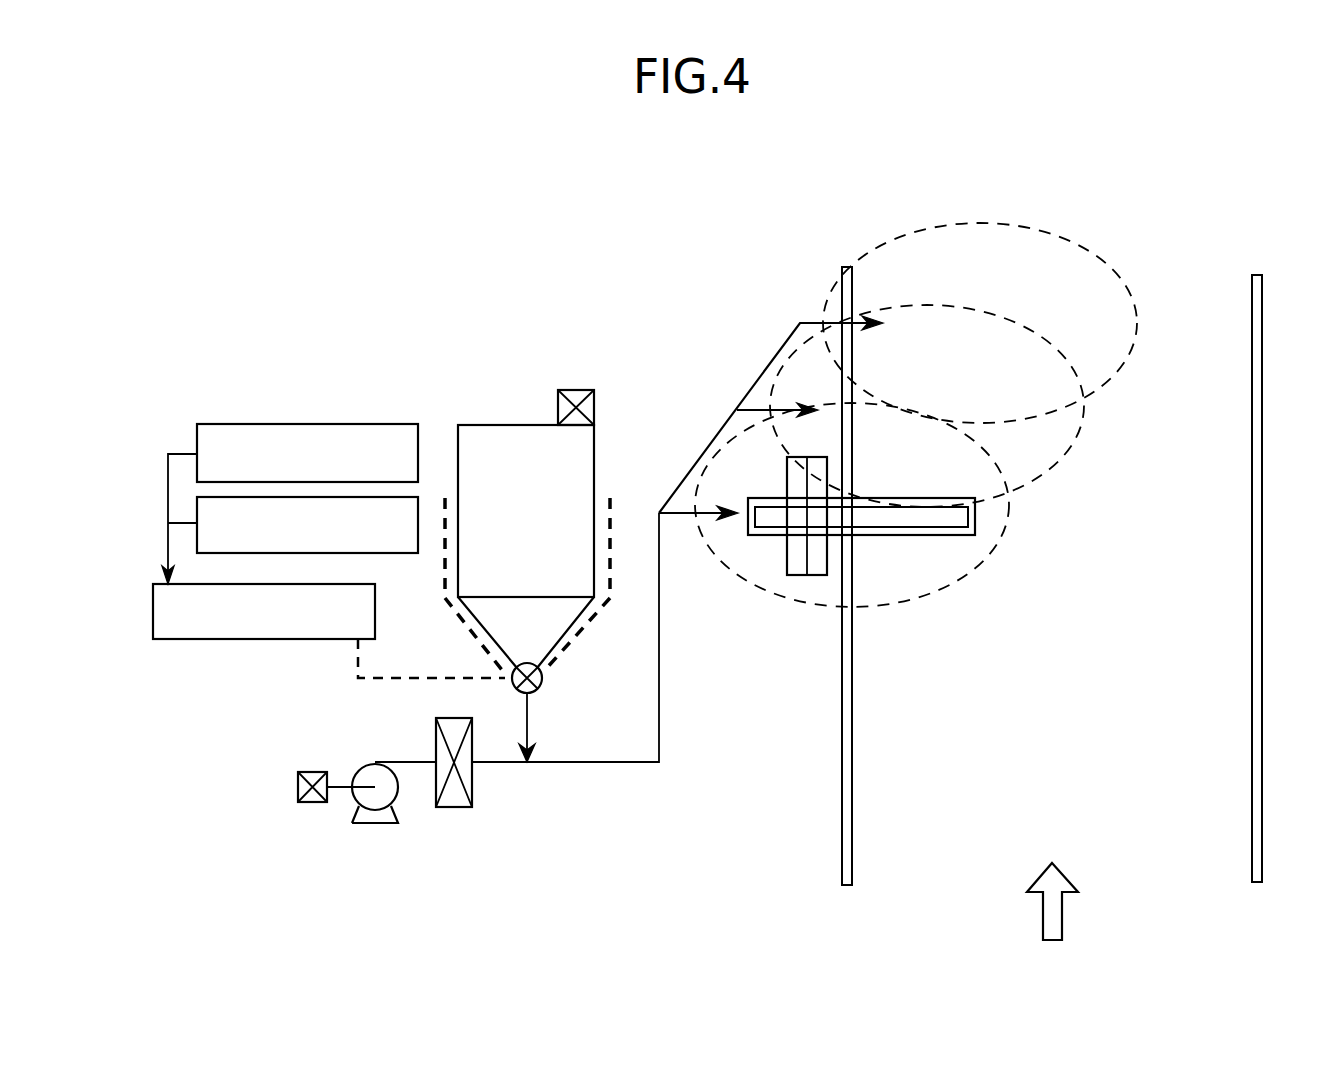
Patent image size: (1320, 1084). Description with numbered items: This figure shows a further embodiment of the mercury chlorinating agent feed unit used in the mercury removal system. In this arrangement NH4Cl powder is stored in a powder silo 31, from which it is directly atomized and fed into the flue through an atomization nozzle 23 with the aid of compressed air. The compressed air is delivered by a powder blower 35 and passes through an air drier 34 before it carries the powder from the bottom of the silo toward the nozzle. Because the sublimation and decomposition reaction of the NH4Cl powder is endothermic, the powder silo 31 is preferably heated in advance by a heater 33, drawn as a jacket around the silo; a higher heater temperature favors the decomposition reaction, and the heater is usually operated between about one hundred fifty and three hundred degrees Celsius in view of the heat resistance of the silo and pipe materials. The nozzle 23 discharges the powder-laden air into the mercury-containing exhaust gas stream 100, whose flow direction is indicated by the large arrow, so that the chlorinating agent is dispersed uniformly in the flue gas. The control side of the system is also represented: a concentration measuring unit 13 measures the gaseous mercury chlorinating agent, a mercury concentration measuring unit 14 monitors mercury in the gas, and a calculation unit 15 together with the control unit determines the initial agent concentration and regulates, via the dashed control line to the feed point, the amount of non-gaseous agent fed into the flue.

The concentration measuring unit 13 is at (272, 423).
The mercury concentration measuring unit 14 is at (300, 495).
The calculation unit 15 is at (170, 641).
The atomization nozzle 23 is at (790, 568).
The powder silo 31 is at (458, 444).
The heater 33 is at (612, 518).
The air drier 34 is at (475, 787).
The powder blower 35 is at (390, 792).
The mercury-containing exhaust gas stream 100 is at (1062, 917).